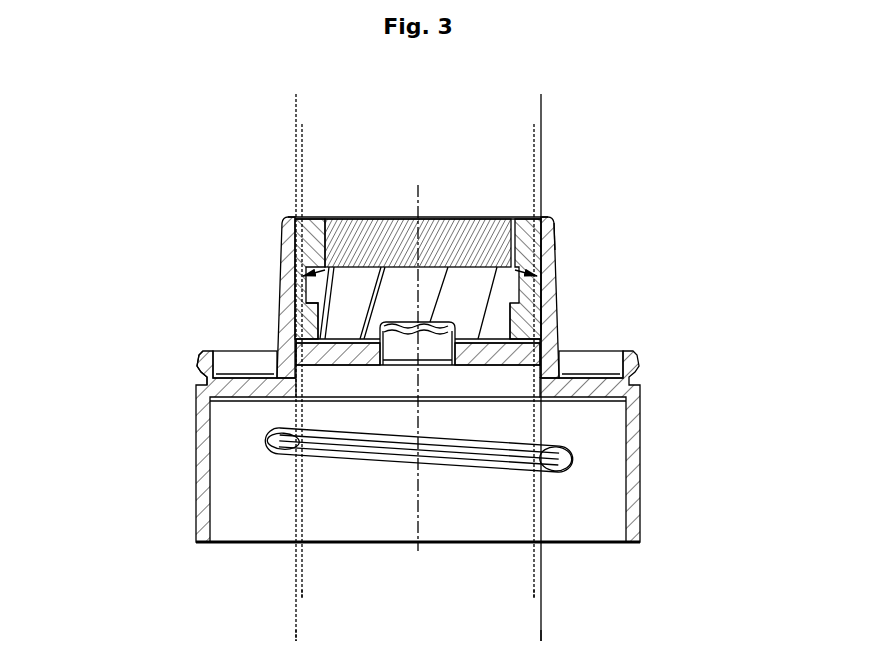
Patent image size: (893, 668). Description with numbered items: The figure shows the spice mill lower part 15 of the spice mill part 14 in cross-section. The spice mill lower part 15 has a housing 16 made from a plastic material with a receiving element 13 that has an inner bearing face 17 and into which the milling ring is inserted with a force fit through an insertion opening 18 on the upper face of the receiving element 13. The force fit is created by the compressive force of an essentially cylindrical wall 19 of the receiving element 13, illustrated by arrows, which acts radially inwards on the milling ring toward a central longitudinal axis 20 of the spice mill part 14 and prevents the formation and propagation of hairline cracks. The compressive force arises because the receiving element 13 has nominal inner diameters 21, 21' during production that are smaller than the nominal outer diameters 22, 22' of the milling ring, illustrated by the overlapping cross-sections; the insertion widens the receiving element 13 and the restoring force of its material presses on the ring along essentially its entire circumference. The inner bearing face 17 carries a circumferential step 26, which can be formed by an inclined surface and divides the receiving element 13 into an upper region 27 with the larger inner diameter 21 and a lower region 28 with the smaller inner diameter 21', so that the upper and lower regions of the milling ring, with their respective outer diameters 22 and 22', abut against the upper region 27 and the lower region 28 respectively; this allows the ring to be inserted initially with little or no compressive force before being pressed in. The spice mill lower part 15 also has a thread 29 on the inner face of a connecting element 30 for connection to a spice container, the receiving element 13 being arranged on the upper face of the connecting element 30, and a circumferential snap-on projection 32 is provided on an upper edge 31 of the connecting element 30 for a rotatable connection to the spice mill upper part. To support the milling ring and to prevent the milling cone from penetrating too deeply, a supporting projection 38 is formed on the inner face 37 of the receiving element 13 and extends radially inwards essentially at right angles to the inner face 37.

The receiving element 13 is at (549, 222).
The spice mill part 14 is at (272, 214).
The spice mill lower part 15 is at (561, 285).
The housing 16 is at (545, 313).
The inner bearing face 17 is at (294, 254).
The insertion opening 18 is at (471, 212).
The wall 19 is at (554, 240).
The central longitudinal axis 20 is at (420, 505).
The inner diameter 21 is at (418, 352).
The outer diameter 22 is at (418, 358).
The inner diameter 21' is at (418, 583).
The outer diameter 22' is at (418, 626).
The circumferential step 26 is at (300, 296).
The upper region 27 is at (541, 258).
The lower region 28 is at (542, 328).
The thread 29 is at (335, 445).
The connecting element 30 is at (634, 427).
The upper edge 31 is at (188, 357).
The snap-on projection 32 is at (197, 366).
The inner face 37 is at (297, 322).
The supporting projection 38 is at (300, 345).